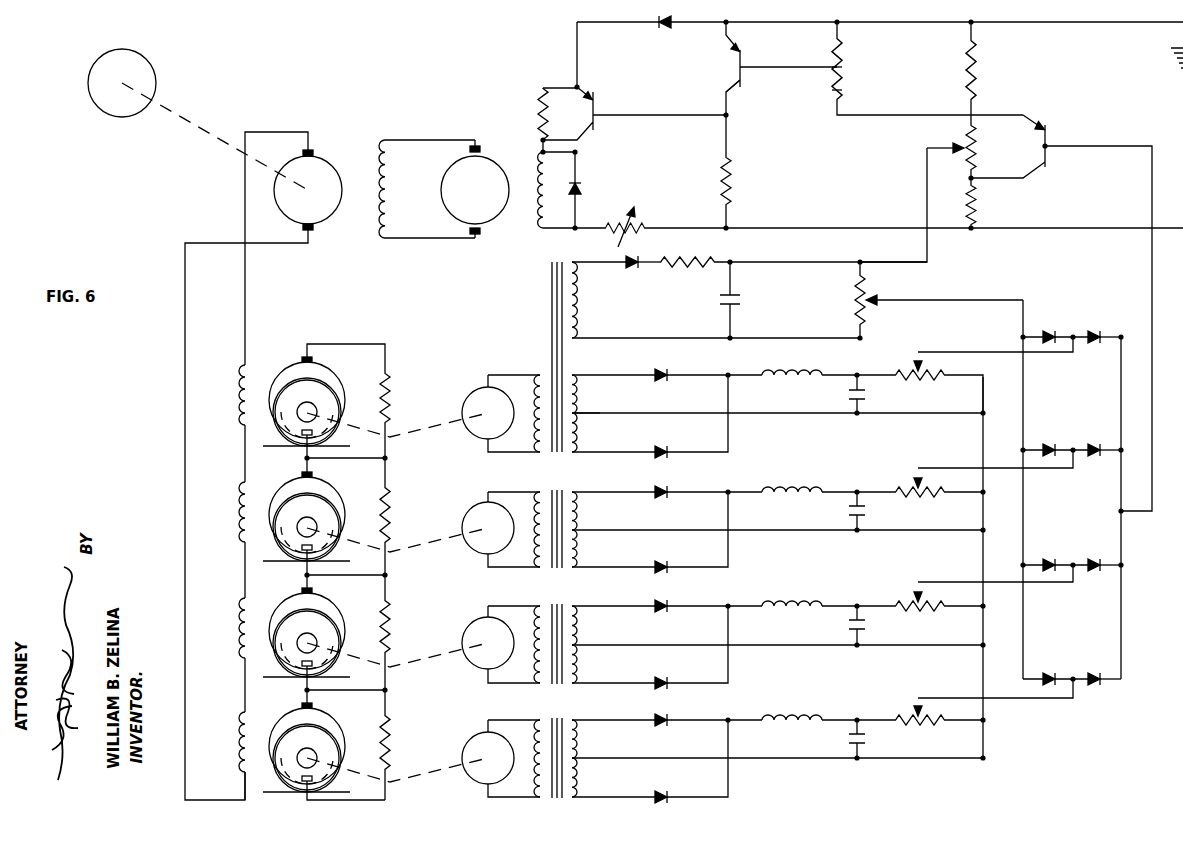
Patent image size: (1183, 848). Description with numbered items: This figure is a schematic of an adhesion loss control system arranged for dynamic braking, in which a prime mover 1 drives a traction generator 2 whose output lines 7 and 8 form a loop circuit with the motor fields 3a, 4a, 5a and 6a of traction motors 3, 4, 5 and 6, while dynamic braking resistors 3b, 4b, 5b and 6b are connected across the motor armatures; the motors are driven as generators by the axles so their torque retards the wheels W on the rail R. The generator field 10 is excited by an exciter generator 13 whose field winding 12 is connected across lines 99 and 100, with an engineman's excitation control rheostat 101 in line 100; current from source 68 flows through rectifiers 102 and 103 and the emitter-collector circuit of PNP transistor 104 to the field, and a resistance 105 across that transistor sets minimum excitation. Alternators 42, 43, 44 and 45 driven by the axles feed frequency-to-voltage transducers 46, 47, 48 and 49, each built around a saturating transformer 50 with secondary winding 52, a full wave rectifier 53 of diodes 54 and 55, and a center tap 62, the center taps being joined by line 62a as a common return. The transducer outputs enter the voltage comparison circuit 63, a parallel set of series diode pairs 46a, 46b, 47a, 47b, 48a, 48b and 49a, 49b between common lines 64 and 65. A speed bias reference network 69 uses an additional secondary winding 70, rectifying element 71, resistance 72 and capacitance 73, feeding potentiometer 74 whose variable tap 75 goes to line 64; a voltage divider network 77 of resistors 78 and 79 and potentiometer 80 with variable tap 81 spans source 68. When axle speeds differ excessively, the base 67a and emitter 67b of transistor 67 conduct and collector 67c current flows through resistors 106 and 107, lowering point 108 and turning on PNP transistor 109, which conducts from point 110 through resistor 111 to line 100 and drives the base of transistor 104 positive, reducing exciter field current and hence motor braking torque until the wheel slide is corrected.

The prime mover 1 is at (144, 55).
The traction generator 2 is at (320, 160).
The traction motor 3 is at (321, 374).
The motor field 3a is at (238, 384).
The dynamic braking resistor 3b is at (389, 392).
The traction motor 4 is at (323, 488).
The motor field 4a is at (238, 502).
The dynamic braking resistor 4b is at (389, 506).
The traction motor 5 is at (325, 604).
The motor field 5a is at (238, 632).
The dynamic braking resistor 5b is at (389, 626).
The traction motor 6 is at (325, 719).
The motor field 6a is at (238, 746).
The dynamic braking resistor 6b is at (389, 741).
The line 7 is at (245, 208).
The line 8 is at (185, 264).
The generator field 10 is at (372, 228).
The exciter generator field winding 12 is at (536, 216).
The exciter generator 13 is at (475, 189).
The alternator 42 is at (460, 396).
The alternator 43 is at (460, 512).
The alternator 44 is at (460, 626).
The alternator 45 is at (460, 741).
The frequency-to-voltage transducer 46 is at (822, 394).
The diode 46a is at (1046, 334).
The diode 46b is at (1112, 322).
The frequency-to-voltage transducer 47 is at (822, 508).
The diode 47a is at (1054, 439).
The diode 47b is at (1092, 448).
The frequency-to-voltage transducer 48 is at (822, 624).
The diode 48a is at (1046, 562).
The diode 48b is at (1092, 561).
The frequency-to-voltage transducer 49 is at (822, 738).
The diode 49a is at (1044, 678).
The diode 49b is at (1098, 684).
The saturating transformer 50 is at (557, 454).
The secondary winding 52 is at (578, 396).
The full wave rectifier 53 is at (611, 405).
The diode 54 is at (666, 380).
The diode 55 is at (662, 450).
The center tap 62 is at (575, 418).
The line 62a is at (980, 440).
The voltage comparison circuit 63 is at (1069, 511).
The common line 64 is at (1023, 618).
The common line 65 is at (1121, 628).
The transistor 67 is at (1040, 176).
The base 67a is at (1053, 144).
The emitter 67b is at (1048, 164).
The collector 67c is at (1042, 120).
The power source 68 is at (1169, 72).
The speed bias reference network 69 is at (716, 300).
The secondary winding 70 is at (577, 288).
The rectifying element 71 is at (631, 268).
The resistance 72 is at (688, 268).
The capacitance 73 is at (738, 310).
The potentiometer 74 is at (850, 304).
The variable tap 75 is at (872, 300).
The voltage divider network 77 is at (933, 57).
The resistor 78 is at (983, 64).
The resistor 79 is at (983, 204).
The potentiometer 80 is at (983, 148).
The variable tap 81 is at (955, 142).
The line 99 is at (1088, 26).
The line 100 is at (1106, 229).
The excitation control rheostat 101 is at (647, 222).
The rectifier 102 is at (880, 36).
The rectifier 103 is at (659, 23).
The PNP transistor 104 is at (600, 130).
The resistance 105 is at (538, 113).
The resistor 106 is at (843, 42).
The resistor 107 is at (843, 88).
The point 108 is at (843, 65).
The PNP transistor 109 is at (738, 87).
The point 110 is at (726, 32).
The resistor 111 is at (736, 180).
The wheels W is at (272, 436).
The rail R is at (273, 446).